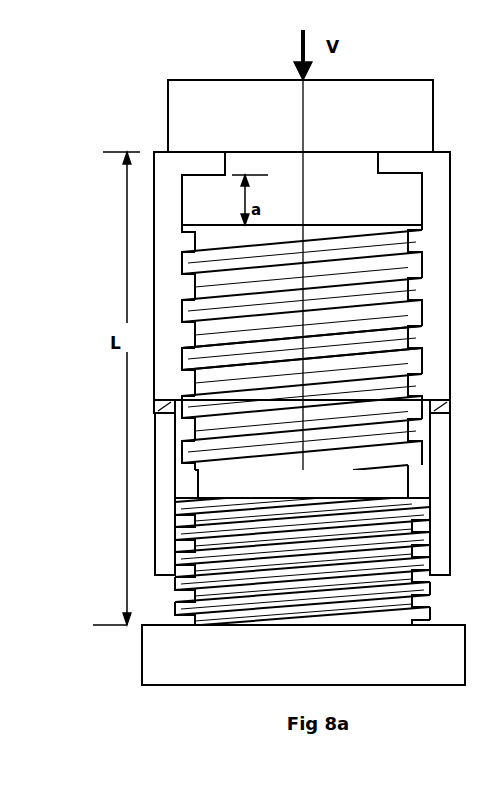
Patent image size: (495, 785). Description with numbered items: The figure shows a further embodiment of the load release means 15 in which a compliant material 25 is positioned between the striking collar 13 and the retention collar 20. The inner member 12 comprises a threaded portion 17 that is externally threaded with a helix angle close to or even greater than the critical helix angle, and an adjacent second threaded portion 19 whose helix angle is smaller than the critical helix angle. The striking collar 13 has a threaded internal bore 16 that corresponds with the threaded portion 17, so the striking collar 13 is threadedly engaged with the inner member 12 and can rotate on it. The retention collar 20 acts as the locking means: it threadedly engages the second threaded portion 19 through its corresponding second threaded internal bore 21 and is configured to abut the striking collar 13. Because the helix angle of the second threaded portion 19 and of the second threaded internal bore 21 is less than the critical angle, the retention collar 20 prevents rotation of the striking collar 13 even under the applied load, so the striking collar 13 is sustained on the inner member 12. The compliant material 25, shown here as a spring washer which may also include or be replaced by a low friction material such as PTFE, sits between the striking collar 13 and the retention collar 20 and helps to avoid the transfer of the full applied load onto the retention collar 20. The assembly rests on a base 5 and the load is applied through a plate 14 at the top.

The base 5 is at (424, 687).
The inner member 12 is at (183, 250).
The striking collar 13 is at (420, 251).
The load plate 14 is at (403, 79).
The load release means 15 is at (154, 370).
The threaded internal bore 16 is at (182, 305).
The threaded portion 17 is at (371, 338).
The second threaded portion 19 is at (425, 591).
The retention collar 20 is at (452, 495).
The second threaded internal bore 21 is at (173, 532).
The compliant material 25 is at (155, 406).